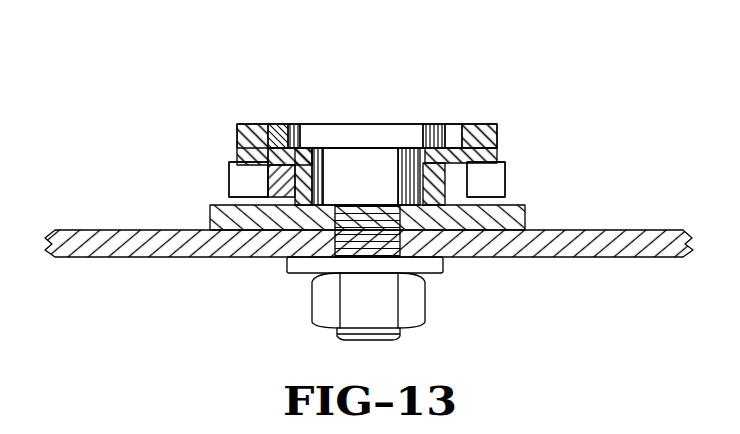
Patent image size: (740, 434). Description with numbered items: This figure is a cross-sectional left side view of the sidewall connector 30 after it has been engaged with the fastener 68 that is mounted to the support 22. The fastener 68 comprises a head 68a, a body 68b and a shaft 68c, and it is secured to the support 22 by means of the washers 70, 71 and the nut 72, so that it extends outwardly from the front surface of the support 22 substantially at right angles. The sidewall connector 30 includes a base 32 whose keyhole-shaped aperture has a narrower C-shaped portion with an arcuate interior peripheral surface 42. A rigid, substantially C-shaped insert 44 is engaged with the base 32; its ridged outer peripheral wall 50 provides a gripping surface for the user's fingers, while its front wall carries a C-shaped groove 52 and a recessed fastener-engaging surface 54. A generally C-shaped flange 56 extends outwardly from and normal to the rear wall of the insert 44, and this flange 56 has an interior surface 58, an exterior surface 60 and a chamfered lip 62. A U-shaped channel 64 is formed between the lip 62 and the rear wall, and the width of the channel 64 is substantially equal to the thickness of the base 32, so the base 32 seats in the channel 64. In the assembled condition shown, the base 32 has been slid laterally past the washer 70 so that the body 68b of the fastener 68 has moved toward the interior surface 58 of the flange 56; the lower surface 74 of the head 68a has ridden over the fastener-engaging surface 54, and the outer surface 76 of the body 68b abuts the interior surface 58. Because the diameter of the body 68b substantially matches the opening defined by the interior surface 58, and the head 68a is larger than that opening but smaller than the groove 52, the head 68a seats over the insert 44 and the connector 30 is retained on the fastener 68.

The support 22 is at (613, 250).
The sidewall connector 30 is at (508, 163).
The base 32 is at (229, 164).
The arcuate interior peripheral surface 42 is at (300, 170).
The insert 44 is at (248, 124).
The outer peripheral wall 50 is at (503, 126).
The C-shaped groove 52 is at (280, 123).
The recessed fastener-engaging surface 54 is at (457, 130).
The flange 56 is at (300, 195).
The interior surface 58 is at (313, 128).
The exterior surface 60 is at (290, 167).
The chamfered lip 62 is at (290, 185).
The U-shaped channel 64 is at (447, 180).
The fastener 68 is at (366, 124).
The head 68a is at (412, 133).
The body 68b is at (338, 126).
The shaft 68c is at (385, 341).
The washer 70 is at (500, 225).
The washer 71 is at (365, 265).
The nut 72 is at (417, 308).
The lower surface 74 is at (396, 150).
The outer surface 76 is at (433, 200).